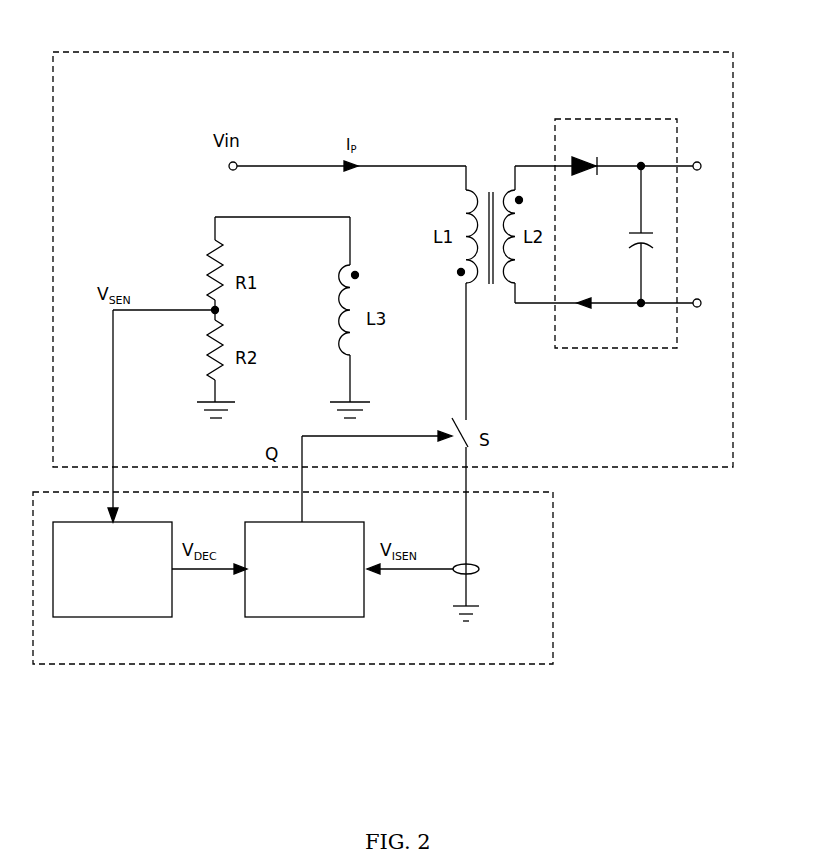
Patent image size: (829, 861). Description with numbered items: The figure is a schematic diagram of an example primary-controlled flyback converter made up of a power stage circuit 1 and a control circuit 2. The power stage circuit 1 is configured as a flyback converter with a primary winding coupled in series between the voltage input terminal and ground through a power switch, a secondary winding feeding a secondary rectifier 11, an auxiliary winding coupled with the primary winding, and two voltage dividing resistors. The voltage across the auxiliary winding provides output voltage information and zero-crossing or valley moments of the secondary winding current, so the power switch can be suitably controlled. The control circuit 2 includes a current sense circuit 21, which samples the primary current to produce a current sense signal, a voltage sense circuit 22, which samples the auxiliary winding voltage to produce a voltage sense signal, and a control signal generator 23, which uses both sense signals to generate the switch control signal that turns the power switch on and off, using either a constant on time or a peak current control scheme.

The power stage circuit 1 is at (410, 52).
The secondary rectifier 11 is at (605, 119).
The control circuit 2 is at (550, 616).
The current sense circuit 21 is at (479, 563).
The voltage sense circuit 22 is at (172, 605).
The control signal generator 23 is at (364, 605).